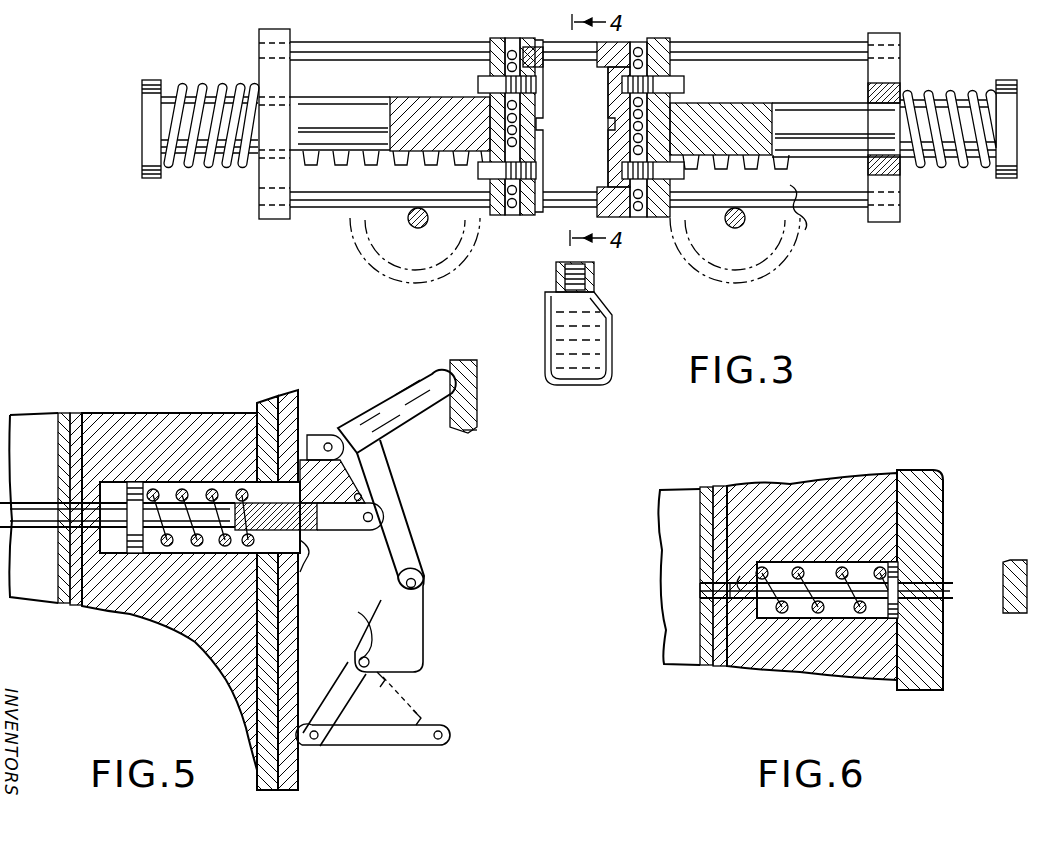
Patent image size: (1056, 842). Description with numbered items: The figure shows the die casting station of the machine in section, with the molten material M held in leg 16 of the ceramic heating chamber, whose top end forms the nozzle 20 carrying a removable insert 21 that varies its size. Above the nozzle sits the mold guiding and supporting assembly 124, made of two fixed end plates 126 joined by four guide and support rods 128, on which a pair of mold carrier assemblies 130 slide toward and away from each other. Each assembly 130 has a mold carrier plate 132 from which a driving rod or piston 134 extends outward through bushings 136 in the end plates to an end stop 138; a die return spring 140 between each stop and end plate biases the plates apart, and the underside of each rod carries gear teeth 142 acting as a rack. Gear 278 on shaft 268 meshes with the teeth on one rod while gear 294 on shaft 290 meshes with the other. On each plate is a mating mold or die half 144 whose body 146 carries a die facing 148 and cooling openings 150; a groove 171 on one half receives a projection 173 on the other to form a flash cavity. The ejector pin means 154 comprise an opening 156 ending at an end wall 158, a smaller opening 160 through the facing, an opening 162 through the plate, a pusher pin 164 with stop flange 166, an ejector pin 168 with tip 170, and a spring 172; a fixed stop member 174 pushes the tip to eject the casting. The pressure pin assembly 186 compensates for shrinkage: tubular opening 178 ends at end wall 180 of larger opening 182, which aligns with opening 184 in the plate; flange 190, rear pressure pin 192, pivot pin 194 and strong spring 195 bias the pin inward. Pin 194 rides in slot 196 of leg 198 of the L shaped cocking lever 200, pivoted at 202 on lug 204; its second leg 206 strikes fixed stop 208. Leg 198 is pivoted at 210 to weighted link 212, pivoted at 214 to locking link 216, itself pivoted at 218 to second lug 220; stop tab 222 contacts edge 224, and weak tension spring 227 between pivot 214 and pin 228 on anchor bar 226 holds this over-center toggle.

In FIG. 3, the leg portion 16 is at (613, 324).
In FIG. 3, the nozzle 20 is at (594, 269).
In FIG. 3, the insert 21 is at (560, 269).
In FIG. 3, the molten material M is at (548, 318).
In FIG. 3, the mold guiding and supporting assembly 124 is at (300, 220).
In FIG. 3, the fixed end plates 126 is at (268, 70).
In FIG. 3, the mold guide and support rods 128 is at (362, 45).
In FIG. 3, the mold carrier assemblies 130 is at (420, 100).
In FIG. 3, the mold carrier plate 132 is at (505, 216).
In FIG. 5, the mold carrier plate 132 is at (280, 400).
In FIG. 6, the mold carrier plate 132 is at (920, 479).
In FIG. 3, the driving rod or piston 134 is at (336, 115).
In FIG. 3, the bushings 136 is at (868, 100).
In FIG. 3, the end stops 138 is at (152, 94).
In FIG. 3, the coil compression die return spring 140 is at (211, 90).
In FIG. 3, the gear teeth 142 is at (349, 166).
In FIG. 3, the mating mold or die half 144 is at (523, 38).
In FIG. 3, the mold half body 146 is at (522, 209).
In FIG. 5, the mold half body 146 is at (172, 418).
In FIG. 6, the mold half body 146 is at (810, 488).
In FIG. 3, the die facing 148 is at (608, 104).
In FIG. 5, the die facing 148 is at (67, 410).
In FIG. 6, the die facing 148 is at (714, 488).
In FIG. 3, the interconnecting openings 150 is at (544, 140).
In FIG. 3, the ejector pin means 154 is at (620, 170).
In FIG. 6, the ejector pin means 154 is at (804, 556).
In FIG. 3, the opening 156 is at (608, 136).
In FIG. 6, the opening 156 is at (834, 568).
In FIG. 6, the end wall 158 is at (760, 604).
In FIG. 6, the smaller opening 160 is at (740, 582).
In FIG. 6, the opening 162 is at (922, 588).
In FIG. 3, the pusher pin 164 is at (478, 83).
In FIG. 6, the pusher pin 164 is at (948, 600).
In FIG. 6, the stop flange 166 is at (898, 567).
In FIG. 6, the ejector pin 168 is at (782, 583).
In FIG. 6, the tip 170 is at (700, 593).
In FIG. 3, the groove 171 is at (538, 50).
In FIG. 6, the coil compression spring 172 is at (817, 614).
In FIG. 3, the projection 173 is at (578, 80).
In FIG. 6, the fixed stop member 174 is at (1020, 558).
In FIG. 5, the tubular opening 178 is at (60, 503).
In FIG. 5, the end wall 180 is at (108, 482).
In FIG. 5, the larger concentric opening 182 is at (192, 482).
In FIG. 5, the opening 184 is at (303, 560).
In FIG. 5, the pressure pin assembly 186 is at (387, 478).
In FIG. 5, the flange 190 is at (137, 488).
In FIG. 5, the rear pressure pin 192 is at (228, 482).
In FIG. 5, the pivot pin 194 is at (375, 518).
In FIG. 5, the coil compression spring 195 is at (165, 548).
In FIG. 5, the slot 196 is at (364, 498).
In FIG. 5, the leg 198 is at (392, 544).
In FIG. 5, the L shaped cocking lever 200 is at (364, 451).
In FIG. 5, the pivot 202 is at (328, 442).
In FIG. 5, the lug 204 is at (332, 482).
In FIG. 5, the second leg 206 is at (388, 408).
In FIG. 5, the fixed stop 208 is at (462, 440).
In FIG. 5, the pivot 210 is at (418, 583).
In FIG. 5, the weighted link 212 is at (422, 630).
In FIG. 5, the pivot 214 is at (358, 612).
In FIG. 5, the locking link 216 is at (334, 700).
In FIG. 5, the pivot 218 is at (325, 745).
In FIG. 5, the second lug 220 is at (312, 750).
In FIG. 5, the stop tab 222 is at (360, 655).
In FIG. 5, the edge 224 is at (390, 592).
In FIG. 5, the spring anchor bar 226 is at (392, 746).
In FIG. 5, the coil tension spring 227 is at (426, 714).
In FIG. 5, the pin 228 is at (445, 748).
In FIG. 3, the shaft 268 is at (412, 227).
In FIG. 3, the gear 278 is at (410, 258).
In FIG. 3, the shaft 290 is at (733, 230).
In FIG. 3, the gear 294 is at (805, 232).